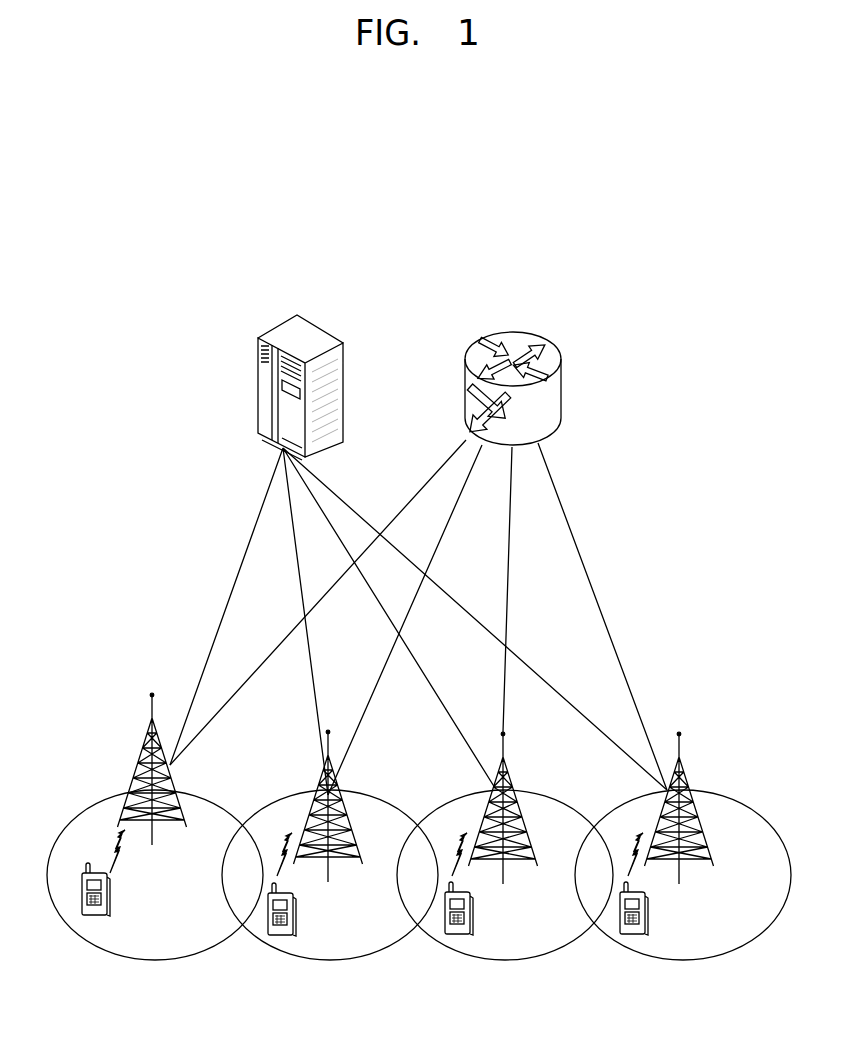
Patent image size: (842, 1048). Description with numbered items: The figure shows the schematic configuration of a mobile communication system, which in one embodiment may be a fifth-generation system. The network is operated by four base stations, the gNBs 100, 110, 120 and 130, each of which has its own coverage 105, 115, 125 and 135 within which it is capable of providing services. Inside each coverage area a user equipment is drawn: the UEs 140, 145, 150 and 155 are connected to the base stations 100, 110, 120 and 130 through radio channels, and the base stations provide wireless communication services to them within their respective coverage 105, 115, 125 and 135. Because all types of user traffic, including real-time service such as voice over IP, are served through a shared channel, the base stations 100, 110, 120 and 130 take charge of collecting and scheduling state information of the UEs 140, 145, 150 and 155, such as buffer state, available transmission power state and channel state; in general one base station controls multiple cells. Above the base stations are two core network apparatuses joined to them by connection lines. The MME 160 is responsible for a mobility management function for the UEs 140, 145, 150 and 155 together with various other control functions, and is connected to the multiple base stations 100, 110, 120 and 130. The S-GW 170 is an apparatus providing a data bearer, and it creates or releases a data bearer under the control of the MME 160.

The gNB 100 is at (140, 750).
The gNB 110 is at (320, 772).
The gNB 120 is at (512, 772).
The gNB 130 is at (685, 770).
The coverage 105 is at (153, 962).
The coverage 115 is at (330, 962).
The coverage 125 is at (505, 962).
The coverage 135 is at (680, 962).
The user equipment 140 is at (82, 912).
The user equipment 145 is at (272, 930).
The user equipment 150 is at (447, 930).
The user equipment 155 is at (623, 932).
The MME 160 is at (285, 332).
The S-GW 170 is at (508, 342).